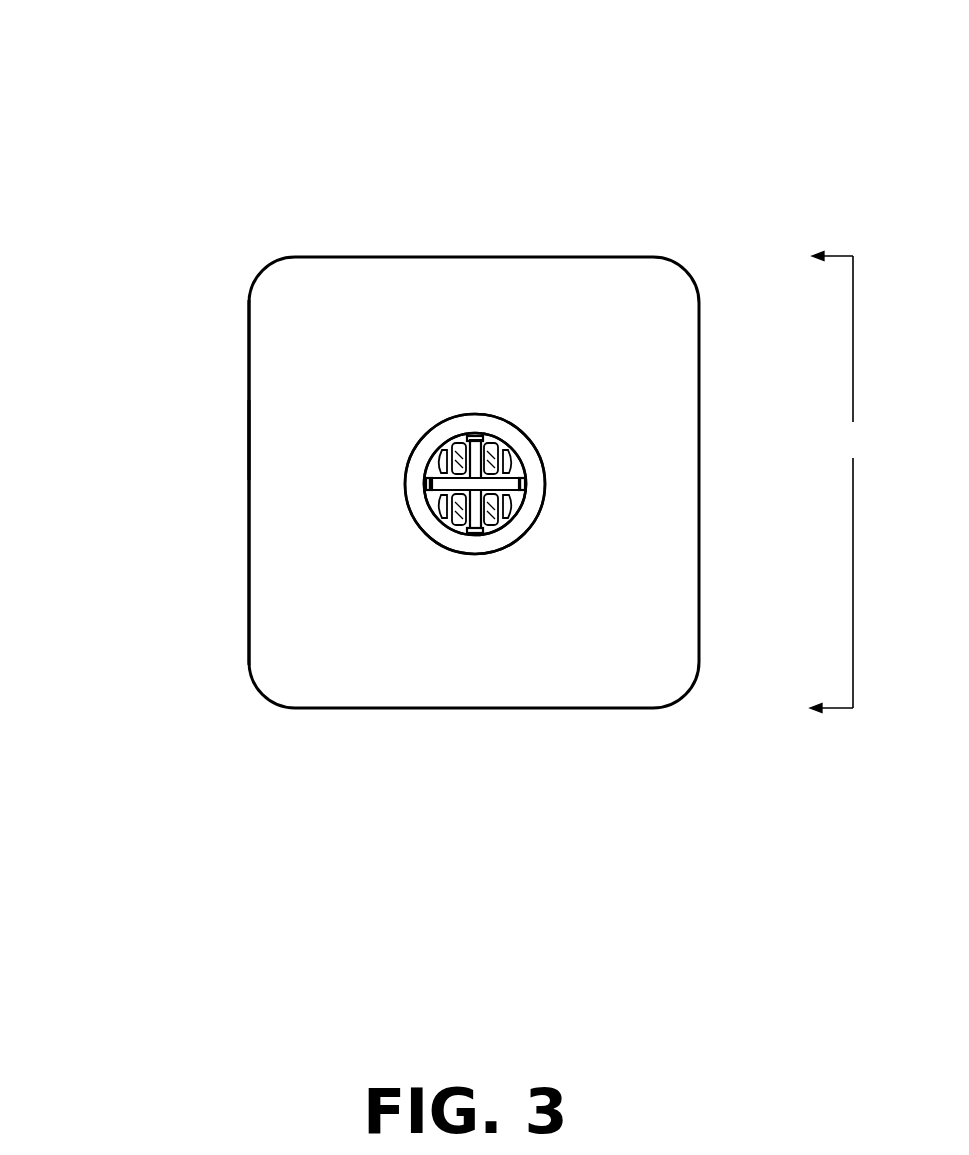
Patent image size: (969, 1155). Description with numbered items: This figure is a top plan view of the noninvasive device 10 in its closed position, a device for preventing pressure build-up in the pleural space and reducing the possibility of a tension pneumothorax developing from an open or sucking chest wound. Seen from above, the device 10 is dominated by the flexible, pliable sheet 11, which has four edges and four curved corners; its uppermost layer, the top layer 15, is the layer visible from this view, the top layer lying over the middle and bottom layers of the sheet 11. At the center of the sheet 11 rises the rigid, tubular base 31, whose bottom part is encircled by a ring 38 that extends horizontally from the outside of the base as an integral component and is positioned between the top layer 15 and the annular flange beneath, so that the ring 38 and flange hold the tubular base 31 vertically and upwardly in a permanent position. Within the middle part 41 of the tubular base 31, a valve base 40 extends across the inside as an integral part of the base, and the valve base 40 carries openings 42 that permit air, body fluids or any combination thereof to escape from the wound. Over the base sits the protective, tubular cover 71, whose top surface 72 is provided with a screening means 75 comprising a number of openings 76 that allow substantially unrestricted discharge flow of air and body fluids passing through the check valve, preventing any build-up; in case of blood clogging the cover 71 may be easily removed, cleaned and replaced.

The noninvasive device 10 is at (835, 482).
The flexible, pliable sheet 11 is at (200, 344).
The top layer 15 is at (249, 503).
The rigid, tubular base 31 is at (448, 531).
The ring 38 is at (383, 524).
The valve base 40 is at (488, 532).
The middle part 41 is at (492, 537).
The openings 42 is at (502, 538).
The protective, tubular cover 71 is at (419, 401).
The top surface 72 is at (520, 439).
The screening means 75 is at (476, 436).
The openings 76 is at (523, 490).